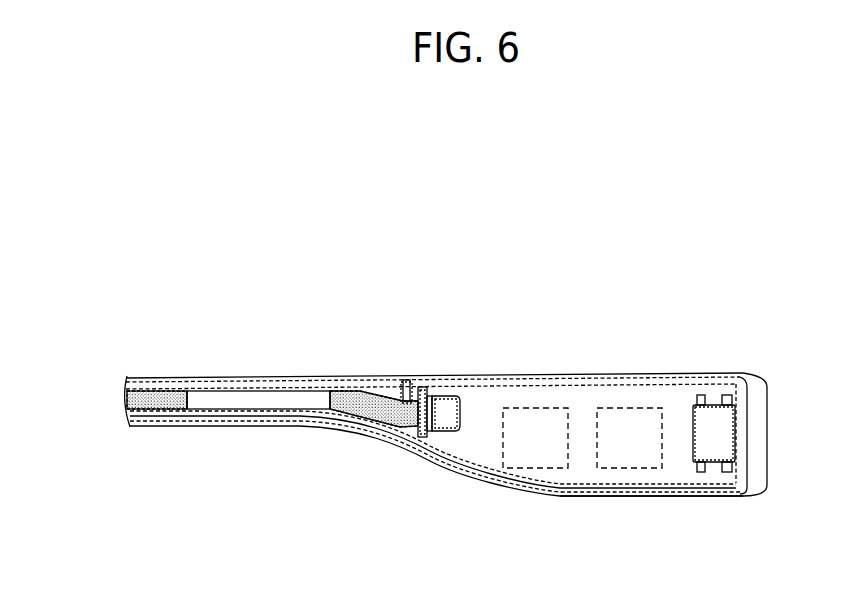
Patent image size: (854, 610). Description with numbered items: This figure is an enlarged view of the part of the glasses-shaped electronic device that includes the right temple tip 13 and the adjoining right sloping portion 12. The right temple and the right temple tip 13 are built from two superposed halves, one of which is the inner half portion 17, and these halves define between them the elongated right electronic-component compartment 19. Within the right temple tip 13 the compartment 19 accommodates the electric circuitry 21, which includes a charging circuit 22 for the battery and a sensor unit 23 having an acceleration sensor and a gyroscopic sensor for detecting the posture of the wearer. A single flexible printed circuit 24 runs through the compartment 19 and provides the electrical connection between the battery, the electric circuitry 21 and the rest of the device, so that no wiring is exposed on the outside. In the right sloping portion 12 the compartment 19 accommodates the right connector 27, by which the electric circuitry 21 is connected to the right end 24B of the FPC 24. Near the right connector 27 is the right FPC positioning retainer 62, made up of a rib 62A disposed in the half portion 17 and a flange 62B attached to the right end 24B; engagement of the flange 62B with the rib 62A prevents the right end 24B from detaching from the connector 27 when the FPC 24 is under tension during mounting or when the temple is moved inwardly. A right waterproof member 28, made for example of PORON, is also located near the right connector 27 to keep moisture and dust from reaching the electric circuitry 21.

The right sloping portion 12 is at (435, 470).
The right temple tip 13 is at (702, 372).
The inner half portion 17 is at (289, 376).
The right electronic-component compartment 19 is at (283, 409).
The electric circuitry 21 is at (678, 489).
The charging circuit 22 is at (546, 408).
The sensor unit 23 is at (622, 408).
The flexible printed circuit 24 is at (160, 409).
The right end of the FPC 24B is at (407, 430).
The right connector 27 is at (445, 399).
The right waterproof member 28 is at (232, 397).
The right FPC positioning retainer 62 is at (422, 351).
The rib 62A is at (407, 381).
The flange 62B is at (445, 371).